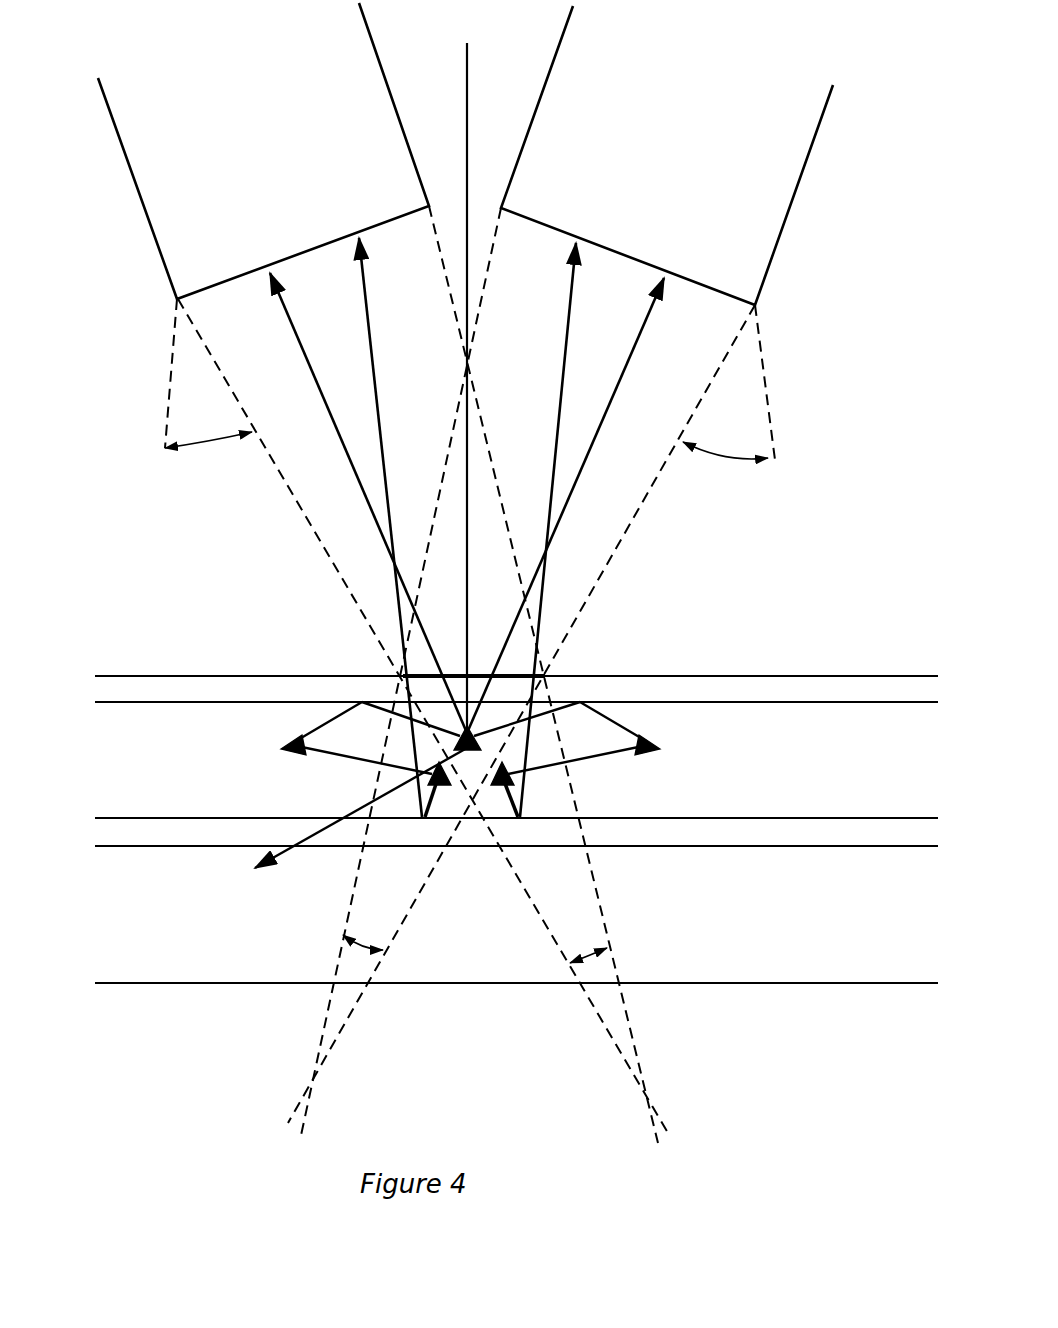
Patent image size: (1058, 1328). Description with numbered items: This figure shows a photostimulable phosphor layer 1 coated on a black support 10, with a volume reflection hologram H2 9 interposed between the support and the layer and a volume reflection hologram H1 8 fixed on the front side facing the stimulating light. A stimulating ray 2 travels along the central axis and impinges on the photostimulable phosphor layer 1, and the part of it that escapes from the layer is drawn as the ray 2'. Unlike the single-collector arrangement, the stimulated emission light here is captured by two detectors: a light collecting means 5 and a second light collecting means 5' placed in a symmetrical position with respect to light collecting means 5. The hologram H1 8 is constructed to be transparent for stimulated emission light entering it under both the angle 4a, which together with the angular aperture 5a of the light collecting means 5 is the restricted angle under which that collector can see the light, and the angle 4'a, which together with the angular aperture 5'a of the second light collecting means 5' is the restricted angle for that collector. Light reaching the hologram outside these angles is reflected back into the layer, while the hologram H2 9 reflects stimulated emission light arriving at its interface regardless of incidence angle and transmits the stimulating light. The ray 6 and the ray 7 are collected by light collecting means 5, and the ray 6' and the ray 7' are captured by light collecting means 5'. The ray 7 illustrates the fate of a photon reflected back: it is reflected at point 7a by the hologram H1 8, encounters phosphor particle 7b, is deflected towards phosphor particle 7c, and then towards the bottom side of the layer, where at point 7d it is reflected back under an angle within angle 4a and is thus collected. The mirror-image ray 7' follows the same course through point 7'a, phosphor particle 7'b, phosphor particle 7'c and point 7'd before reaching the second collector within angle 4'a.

The photostimulable phosphor layer 1 is at (916, 752).
The stimulating ray 2 is at (443, 394).
The escaping part of stimulating ray 2' is at (361, 822).
The angle 4a is at (366, 946).
The angle 4'a is at (436, 674).
The light collecting means 5 is at (684, 155).
The second light collecting means 5' is at (251, 151).
The angular aperture 5a is at (745, 458).
The angular aperture 5'a is at (184, 373).
The ray of stimulated emission light 6 is at (636, 505).
The ray of stimulated emission light 6' is at (299, 503).
The ray of stimulated emission light 7 is at (639, 530).
The ray of stimulated emission light 7' is at (298, 527).
The reflection point 7a is at (580, 702).
The reflection point 7'a is at (375, 685).
The phosphor particle 7b is at (662, 748).
The phosphor particle 7'b is at (326, 752).
The phosphor particle 7c is at (513, 777).
The phosphor particle 7'c is at (389, 789).
The bottom reflection point 7d is at (518, 817).
The bottom reflection point 7'd is at (398, 849).
The volume reflection hologram H1 8 is at (914, 692).
The volume reflection hologram H2 9 is at (916, 834).
The black support 10 is at (908, 920).